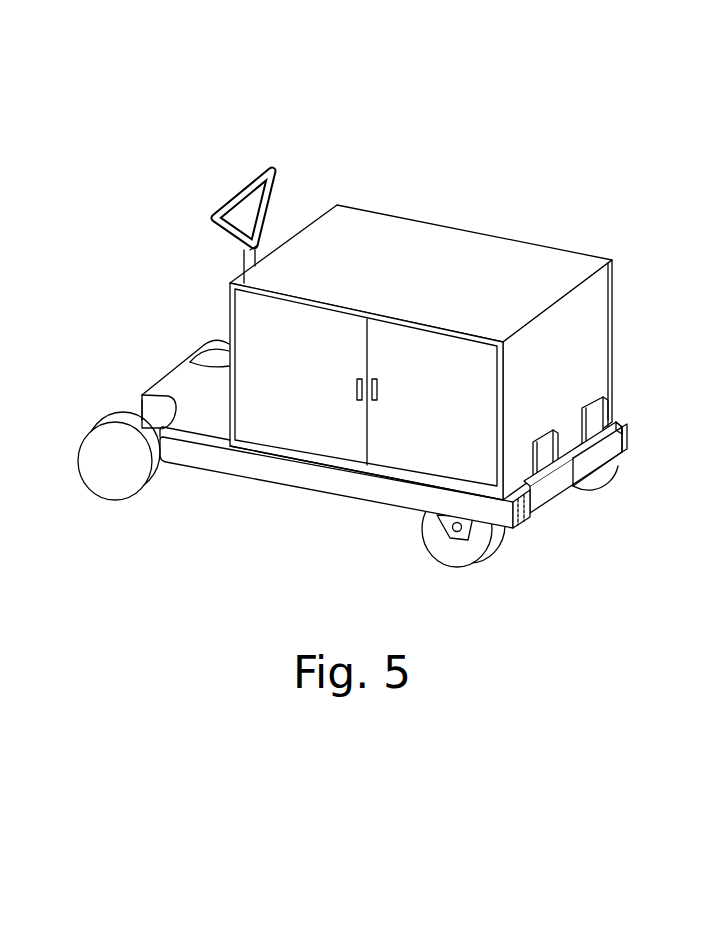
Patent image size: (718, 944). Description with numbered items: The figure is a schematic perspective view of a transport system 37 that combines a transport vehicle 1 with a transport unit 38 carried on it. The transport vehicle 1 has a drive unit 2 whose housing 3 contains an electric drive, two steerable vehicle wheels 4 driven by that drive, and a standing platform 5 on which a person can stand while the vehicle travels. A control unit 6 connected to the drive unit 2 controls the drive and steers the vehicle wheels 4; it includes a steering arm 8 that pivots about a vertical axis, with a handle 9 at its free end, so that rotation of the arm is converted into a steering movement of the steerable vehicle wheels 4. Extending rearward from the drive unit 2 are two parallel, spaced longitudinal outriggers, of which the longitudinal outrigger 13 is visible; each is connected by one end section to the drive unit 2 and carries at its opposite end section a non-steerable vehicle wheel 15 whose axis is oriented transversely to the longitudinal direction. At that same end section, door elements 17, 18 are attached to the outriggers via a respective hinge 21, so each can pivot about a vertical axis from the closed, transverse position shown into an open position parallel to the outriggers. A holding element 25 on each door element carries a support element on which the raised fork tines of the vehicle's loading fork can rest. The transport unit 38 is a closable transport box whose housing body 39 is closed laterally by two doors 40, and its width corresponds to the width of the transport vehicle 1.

The transport vehicle 1 is at (300, 506).
The drive unit 2 is at (139, 401).
The housing 3 is at (160, 392).
The steerable vehicle wheels 4 is at (113, 487).
The standing platform 5 is at (185, 387).
The control unit 6 is at (243, 265).
The steering arm 8 is at (262, 247).
The handle 9 is at (237, 193).
The longitudinal outrigger 13 is at (260, 470).
The non-steerable vehicle wheel 15 is at (460, 548).
The door element 17 is at (548, 498).
The door element 18 is at (614, 452).
The hinge 21 is at (525, 517).
The holding element 25 is at (543, 437).
The transport system 37 is at (421, 353).
The transport unit 38 is at (421, 245).
The housing body 39 is at (550, 262).
The doors 40 is at (317, 322).